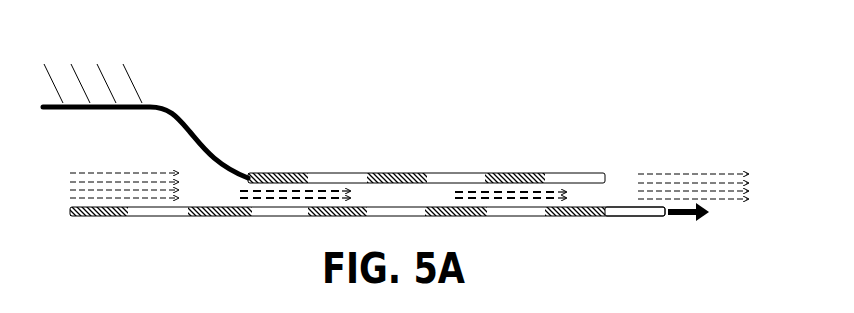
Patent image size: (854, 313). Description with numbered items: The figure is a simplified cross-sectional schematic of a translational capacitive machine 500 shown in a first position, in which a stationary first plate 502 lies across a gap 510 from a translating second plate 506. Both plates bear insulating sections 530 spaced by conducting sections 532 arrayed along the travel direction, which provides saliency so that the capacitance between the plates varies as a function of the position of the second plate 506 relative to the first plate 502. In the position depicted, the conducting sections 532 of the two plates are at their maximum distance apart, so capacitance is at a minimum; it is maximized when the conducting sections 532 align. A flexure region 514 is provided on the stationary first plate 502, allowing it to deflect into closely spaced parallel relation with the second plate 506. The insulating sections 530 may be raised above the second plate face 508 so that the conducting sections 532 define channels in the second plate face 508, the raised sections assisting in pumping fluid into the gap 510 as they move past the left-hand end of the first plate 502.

The capacitive machine 500 is at (367, 138).
The first plate 502 is at (426, 143).
The second plate 506 is at (642, 218).
The second plate face 508 is at (378, 205).
The gap 510 is at (593, 195).
The flexure region 514 is at (193, 131).
The insulating sections 530 is at (443, 172).
The conducting sections 532 is at (498, 172).